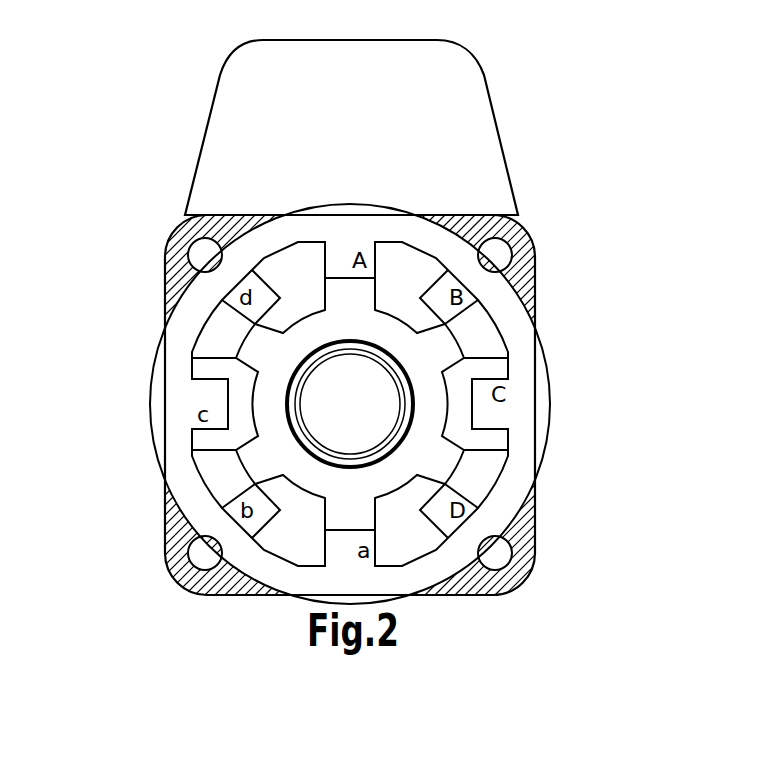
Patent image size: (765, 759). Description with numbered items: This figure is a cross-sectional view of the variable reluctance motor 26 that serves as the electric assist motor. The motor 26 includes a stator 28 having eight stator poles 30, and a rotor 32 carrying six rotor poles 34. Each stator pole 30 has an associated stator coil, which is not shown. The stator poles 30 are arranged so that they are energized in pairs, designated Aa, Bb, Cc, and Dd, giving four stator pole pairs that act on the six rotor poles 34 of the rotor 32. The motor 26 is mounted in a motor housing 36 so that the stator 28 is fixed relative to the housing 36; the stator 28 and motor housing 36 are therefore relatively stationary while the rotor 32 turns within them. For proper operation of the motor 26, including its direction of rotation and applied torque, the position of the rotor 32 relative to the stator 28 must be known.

The variable reluctance motor 26 is at (543, 354).
The stator 28 is at (200, 318).
The stator poles 30 is at (380, 266).
The rotor 32 is at (441, 383).
The rotor poles 34 is at (236, 352).
The motor housing 36 is at (527, 266).